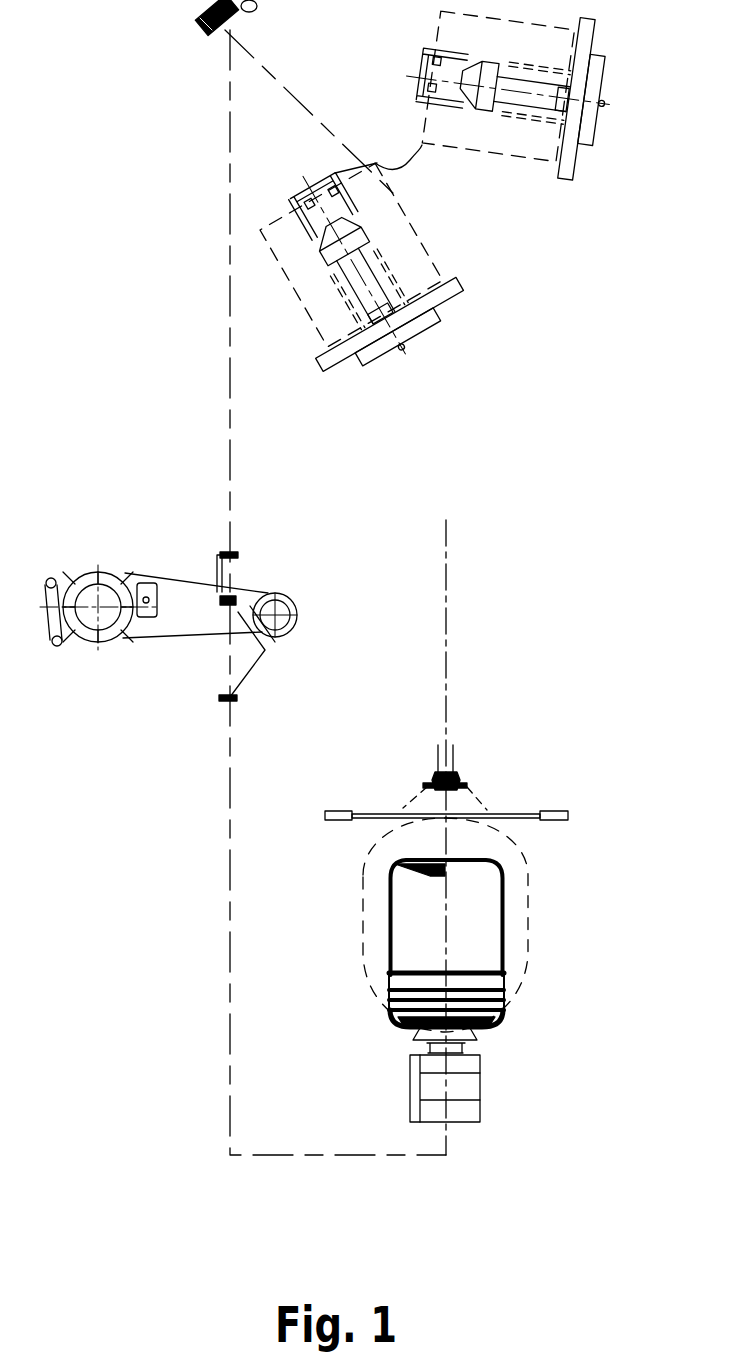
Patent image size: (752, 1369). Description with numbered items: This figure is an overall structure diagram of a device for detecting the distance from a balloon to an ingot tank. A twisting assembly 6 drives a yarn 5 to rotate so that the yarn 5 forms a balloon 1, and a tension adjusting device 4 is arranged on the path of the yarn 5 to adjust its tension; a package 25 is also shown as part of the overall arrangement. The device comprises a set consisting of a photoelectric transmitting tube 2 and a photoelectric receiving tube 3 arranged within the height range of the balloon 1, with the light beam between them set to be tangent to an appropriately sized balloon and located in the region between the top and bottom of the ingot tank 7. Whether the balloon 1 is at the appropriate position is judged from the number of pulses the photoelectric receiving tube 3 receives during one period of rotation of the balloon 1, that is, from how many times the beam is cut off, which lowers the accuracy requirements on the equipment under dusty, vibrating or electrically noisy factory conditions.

The balloon 1 is at (528, 922).
The photoelectric transmitting tube 2 is at (545, 810).
The photoelectric receiving tube 3 is at (333, 810).
The tension adjusting device 4 is at (145, 575).
The yarn 5 is at (230, 817).
The twisting assembly 6 is at (463, 1058).
The ingot tank 7 is at (503, 980).
The package 25 is at (468, 288).